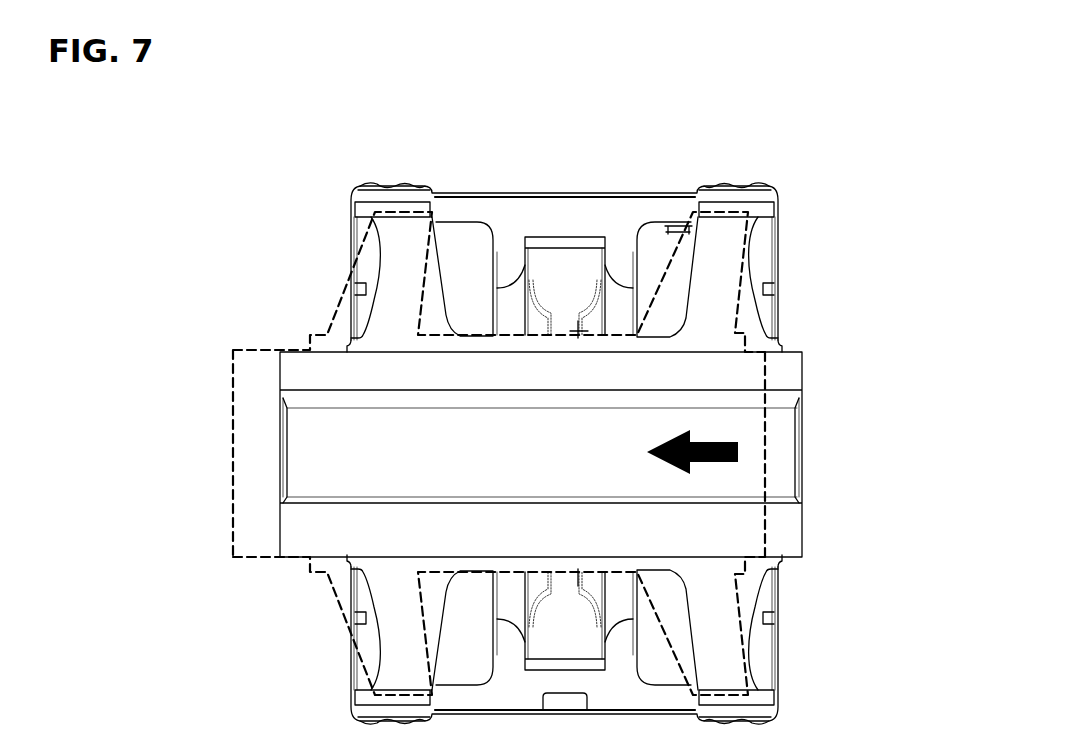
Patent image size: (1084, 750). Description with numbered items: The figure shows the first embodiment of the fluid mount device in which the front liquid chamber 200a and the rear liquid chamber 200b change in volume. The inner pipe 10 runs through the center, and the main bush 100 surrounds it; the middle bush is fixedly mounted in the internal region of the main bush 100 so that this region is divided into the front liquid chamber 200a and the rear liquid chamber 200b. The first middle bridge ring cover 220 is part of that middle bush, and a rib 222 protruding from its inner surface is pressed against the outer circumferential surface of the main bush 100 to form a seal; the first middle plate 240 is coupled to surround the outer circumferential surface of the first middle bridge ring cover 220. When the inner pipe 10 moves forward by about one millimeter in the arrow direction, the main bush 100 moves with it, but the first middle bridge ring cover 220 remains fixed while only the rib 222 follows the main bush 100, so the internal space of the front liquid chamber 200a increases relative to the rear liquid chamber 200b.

The inner pipe 10 is at (295, 375).
The main bush 100 is at (365, 312).
The front liquid chamber 200a is at (462, 247).
The rear liquid chamber 200b is at (665, 253).
The first middle bridge ring cover 220 is at (550, 265).
The rib 222 is at (585, 333).
The first middle plate 240 is at (656, 210).